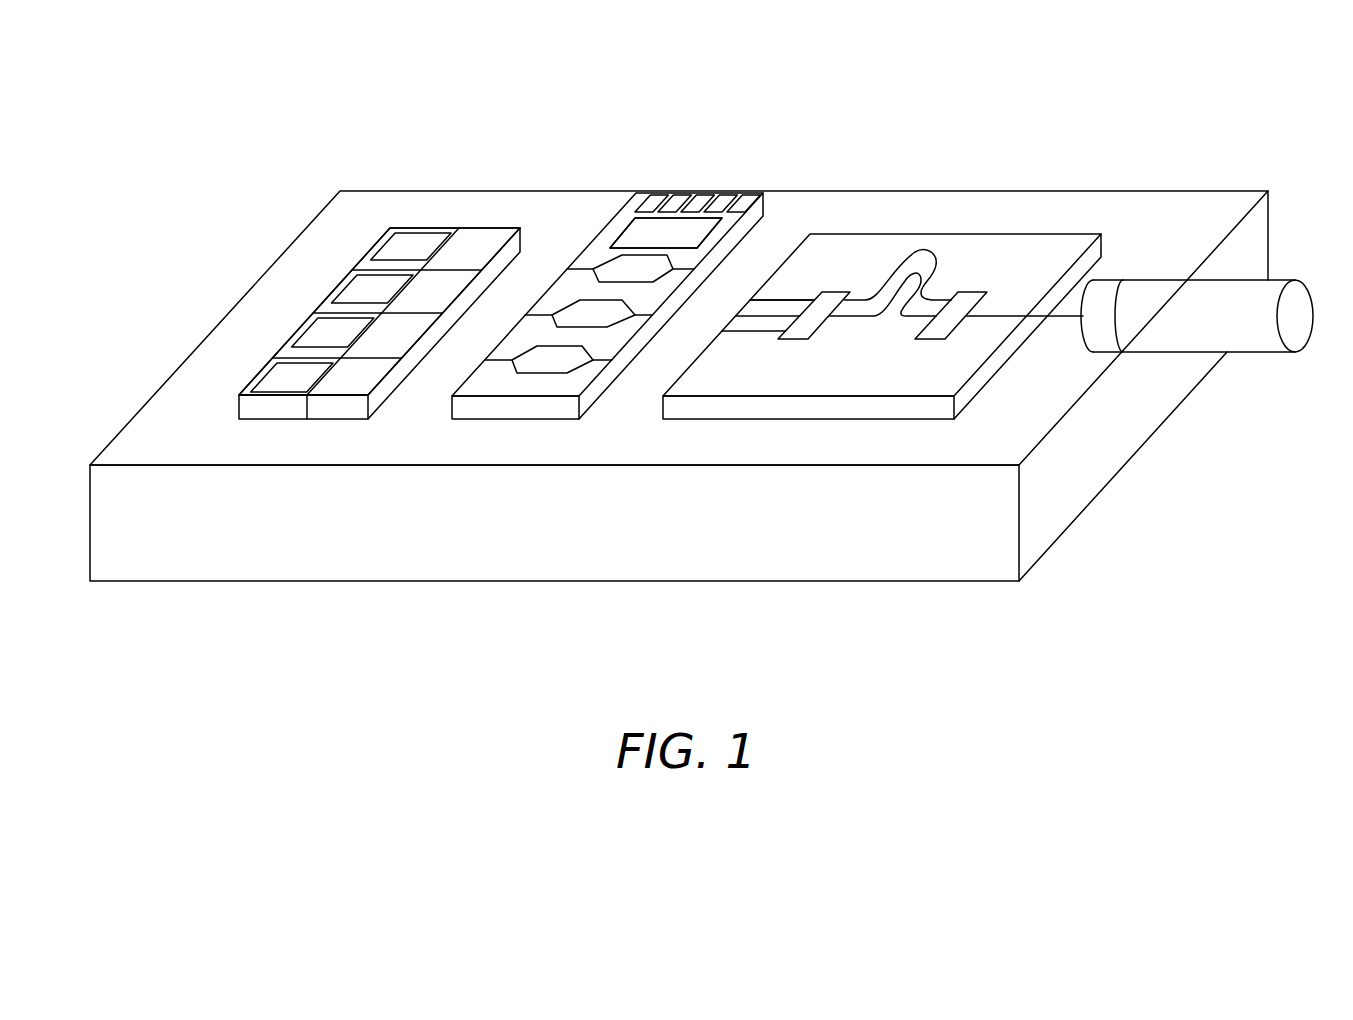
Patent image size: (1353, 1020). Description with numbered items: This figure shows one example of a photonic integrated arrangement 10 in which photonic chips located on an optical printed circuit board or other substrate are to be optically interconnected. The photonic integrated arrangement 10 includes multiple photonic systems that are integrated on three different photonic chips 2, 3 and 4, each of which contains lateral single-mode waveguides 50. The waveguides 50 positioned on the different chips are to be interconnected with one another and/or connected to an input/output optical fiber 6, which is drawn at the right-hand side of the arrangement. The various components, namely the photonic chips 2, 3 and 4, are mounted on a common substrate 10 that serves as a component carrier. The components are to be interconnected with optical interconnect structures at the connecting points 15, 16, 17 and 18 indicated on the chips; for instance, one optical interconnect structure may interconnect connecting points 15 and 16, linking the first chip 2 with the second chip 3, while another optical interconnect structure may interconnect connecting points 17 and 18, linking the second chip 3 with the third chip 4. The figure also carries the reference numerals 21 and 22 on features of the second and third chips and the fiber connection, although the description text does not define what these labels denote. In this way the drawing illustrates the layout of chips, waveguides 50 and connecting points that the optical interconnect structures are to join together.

The photonic integrated arrangement 10 is at (256, 139).
The photonic chip 2 is at (337, 410).
The photonic chip 3 is at (539, 410).
The photonic chip 4 is at (857, 408).
The connecting point 15 is at (377, 357).
The lateral single-mode waveguide 50 is at (466, 269).
The connecting point 16 is at (497, 362).
The connecting point 17 is at (605, 362).
The electrical contacts 21 is at (755, 212).
The connecting point 18 is at (757, 333).
The fluid conduit 22 is at (1060, 317).
The input/output optical fiber 6 is at (1253, 341).